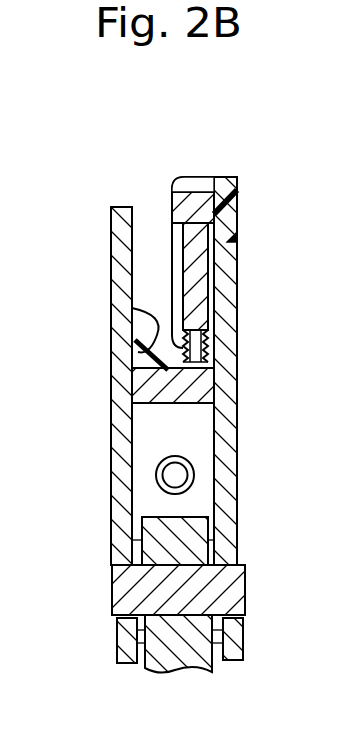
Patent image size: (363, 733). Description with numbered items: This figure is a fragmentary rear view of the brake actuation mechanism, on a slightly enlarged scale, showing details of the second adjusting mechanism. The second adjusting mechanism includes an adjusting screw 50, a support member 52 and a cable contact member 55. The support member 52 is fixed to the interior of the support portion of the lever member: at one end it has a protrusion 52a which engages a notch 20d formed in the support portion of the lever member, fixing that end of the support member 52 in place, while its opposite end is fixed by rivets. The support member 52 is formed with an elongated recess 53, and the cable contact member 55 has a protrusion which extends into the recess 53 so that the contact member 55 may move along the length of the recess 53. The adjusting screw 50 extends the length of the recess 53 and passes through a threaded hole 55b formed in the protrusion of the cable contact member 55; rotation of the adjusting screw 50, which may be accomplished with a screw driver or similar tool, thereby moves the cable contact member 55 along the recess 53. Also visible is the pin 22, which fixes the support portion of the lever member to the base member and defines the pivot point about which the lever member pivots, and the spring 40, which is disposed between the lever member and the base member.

The notch 20d is at (228, 252).
The pin 22 is at (233, 595).
The spring 40 is at (194, 475).
The adjusting screw 50 is at (172, 263).
The support member 52 is at (197, 180).
The protrusion 52a is at (230, 187).
The elongated recess 53 is at (172, 227).
The cable contact member 55 is at (140, 316).
The threaded hole 55b is at (210, 350).